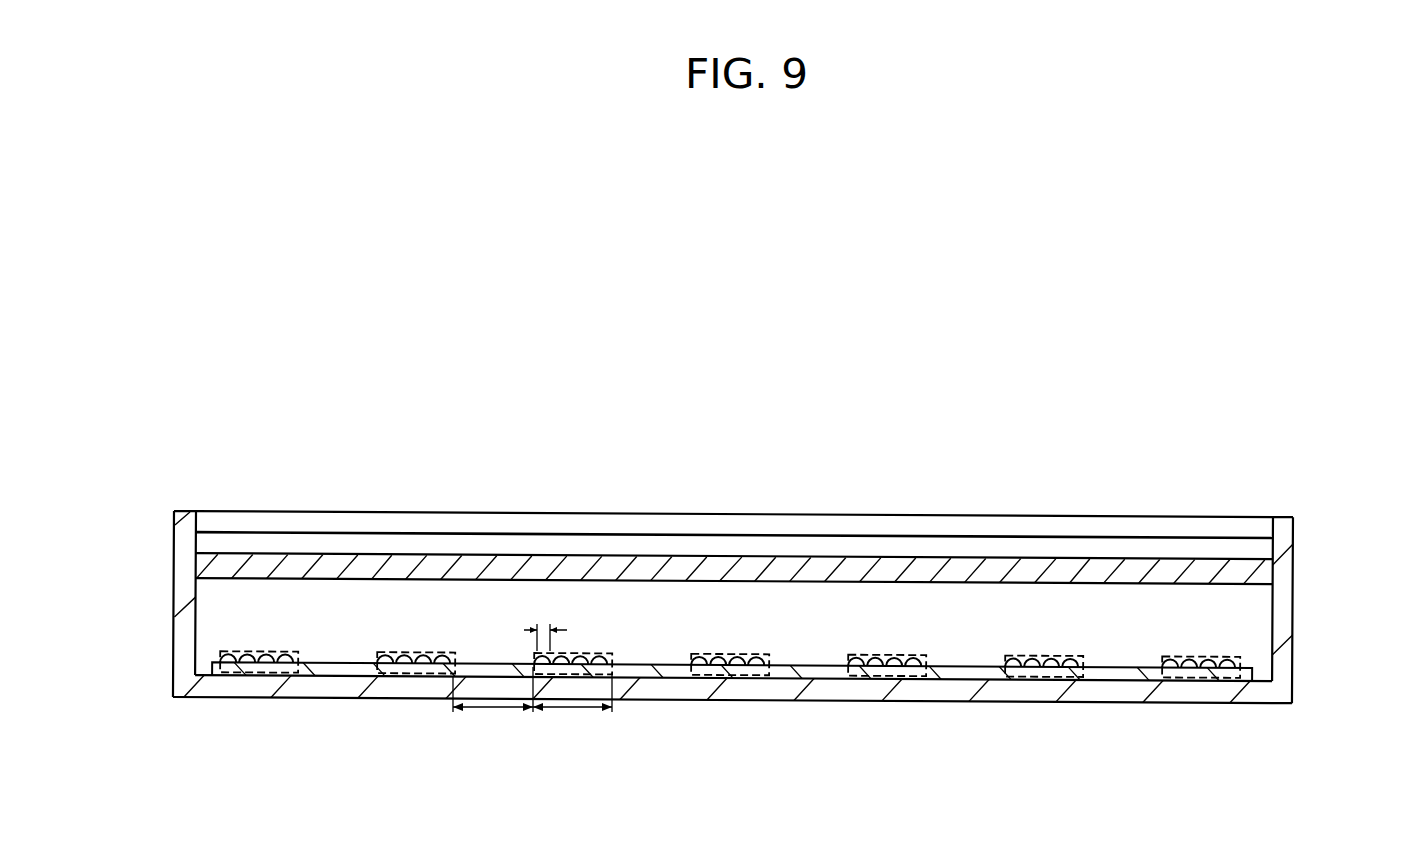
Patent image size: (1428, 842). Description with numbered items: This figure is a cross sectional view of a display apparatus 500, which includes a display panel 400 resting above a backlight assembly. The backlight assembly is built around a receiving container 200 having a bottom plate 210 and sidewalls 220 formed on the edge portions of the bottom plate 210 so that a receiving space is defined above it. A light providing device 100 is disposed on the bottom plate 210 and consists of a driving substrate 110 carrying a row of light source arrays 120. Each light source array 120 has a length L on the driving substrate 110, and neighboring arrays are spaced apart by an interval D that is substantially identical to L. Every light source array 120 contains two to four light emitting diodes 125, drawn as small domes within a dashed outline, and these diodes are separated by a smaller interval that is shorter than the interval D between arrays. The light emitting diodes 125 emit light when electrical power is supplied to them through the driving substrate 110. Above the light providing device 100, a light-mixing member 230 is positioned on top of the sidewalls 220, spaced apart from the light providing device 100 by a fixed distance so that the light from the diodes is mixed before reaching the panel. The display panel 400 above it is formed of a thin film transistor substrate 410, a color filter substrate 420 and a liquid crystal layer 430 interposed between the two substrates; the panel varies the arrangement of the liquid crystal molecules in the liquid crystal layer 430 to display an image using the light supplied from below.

The light providing device 100 is at (681, 693).
The driving substrate 110 is at (302, 676).
The light source array 120 is at (675, 654).
The light emitting diode 125 is at (222, 657).
The receiving container 200 is at (783, 636).
The bottom plate 210 is at (425, 690).
The sidewall 220 is at (1287, 599).
The light-mixing member 230 is at (1250, 563).
The display panel 400 is at (734, 481).
The thin film transistor substrate 410 is at (762, 440).
The color filter substrate 420 is at (775, 525).
The liquid crystal layer 430 is at (802, 540).
The display apparatus 500 is at (751, 583).